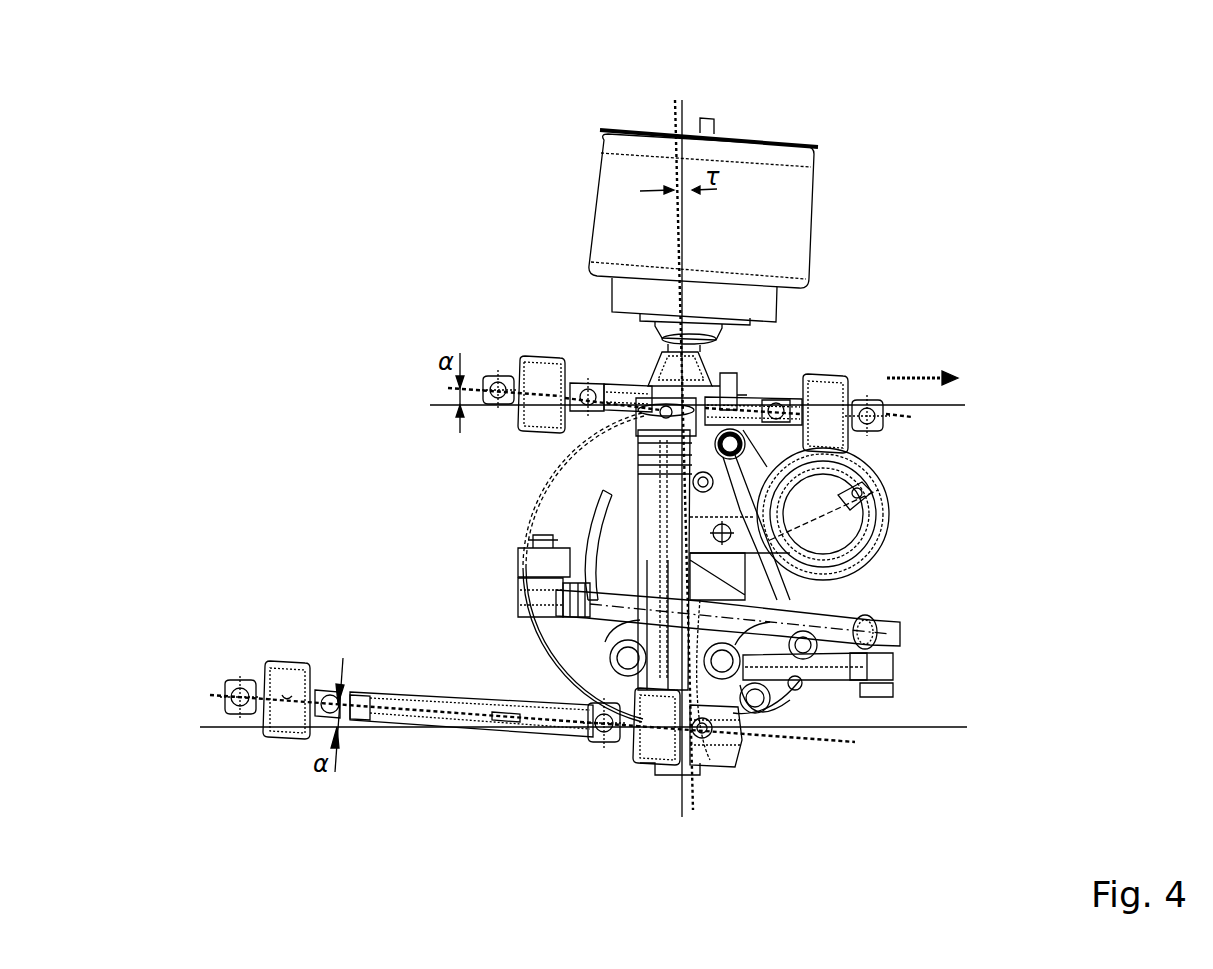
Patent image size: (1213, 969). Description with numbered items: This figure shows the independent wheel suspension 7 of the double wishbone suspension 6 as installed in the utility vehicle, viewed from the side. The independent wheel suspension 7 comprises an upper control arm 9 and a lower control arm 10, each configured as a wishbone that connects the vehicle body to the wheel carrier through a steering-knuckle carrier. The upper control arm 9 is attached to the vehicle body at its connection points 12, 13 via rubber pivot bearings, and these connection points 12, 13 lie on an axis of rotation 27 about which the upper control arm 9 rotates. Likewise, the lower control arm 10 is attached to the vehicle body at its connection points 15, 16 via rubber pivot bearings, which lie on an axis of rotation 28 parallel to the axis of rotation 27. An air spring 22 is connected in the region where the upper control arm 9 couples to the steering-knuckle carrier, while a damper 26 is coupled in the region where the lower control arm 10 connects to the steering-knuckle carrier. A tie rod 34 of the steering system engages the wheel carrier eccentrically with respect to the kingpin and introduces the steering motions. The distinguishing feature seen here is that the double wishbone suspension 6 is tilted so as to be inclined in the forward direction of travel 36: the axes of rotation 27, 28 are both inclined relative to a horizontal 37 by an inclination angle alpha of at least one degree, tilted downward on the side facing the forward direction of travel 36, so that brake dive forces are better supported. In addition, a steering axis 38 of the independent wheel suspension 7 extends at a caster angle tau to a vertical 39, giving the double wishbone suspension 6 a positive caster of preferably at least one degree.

The double wishbone suspension 6 is at (861, 160).
The independent wheel suspension 7 is at (553, 176).
The upper control arm 9 is at (612, 385).
The lower control arm 10 is at (402, 717).
The connection point 12 is at (830, 377).
The connection point 13 is at (527, 430).
The connection point 15 is at (648, 770).
The connection point 16 is at (296, 662).
The air spring 22 is at (767, 187).
The damper 26 is at (655, 495).
The axis of rotation 27 is at (478, 380).
The axis of rotation 28 is at (817, 740).
The tie rod 34 is at (852, 612).
The forward direction of travel 36 is at (911, 377).
The horizontal 37 is at (433, 405).
The steering axis 38 is at (673, 118).
The vertical 39 is at (684, 117).